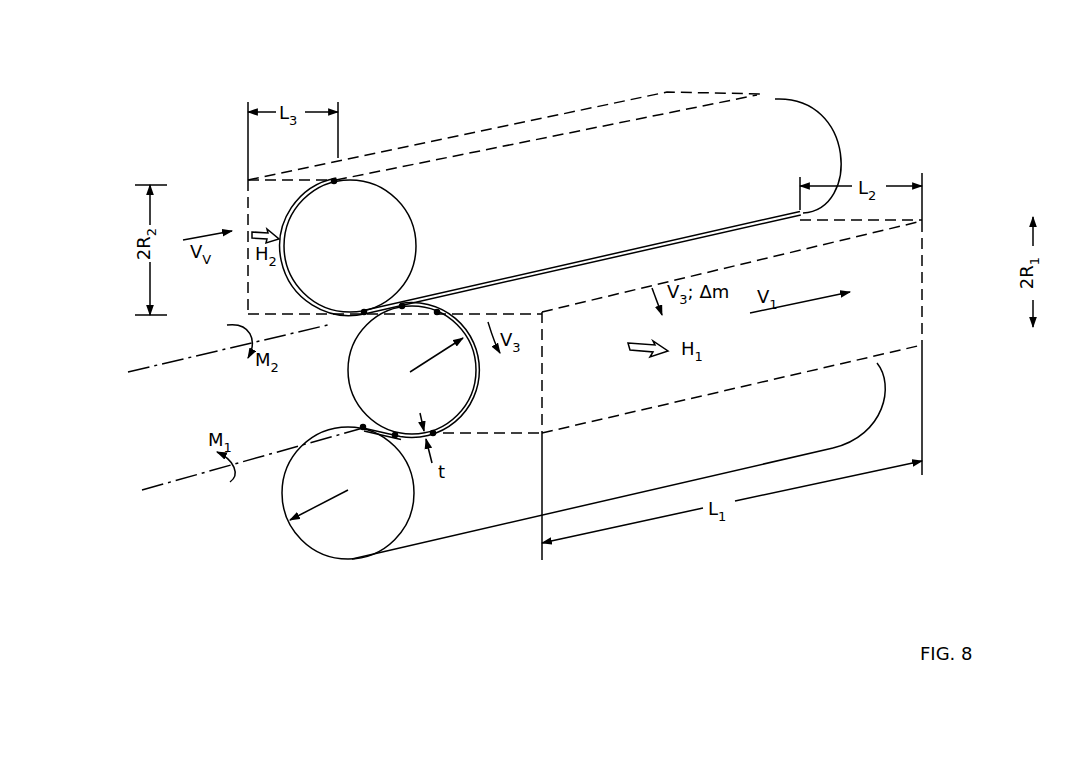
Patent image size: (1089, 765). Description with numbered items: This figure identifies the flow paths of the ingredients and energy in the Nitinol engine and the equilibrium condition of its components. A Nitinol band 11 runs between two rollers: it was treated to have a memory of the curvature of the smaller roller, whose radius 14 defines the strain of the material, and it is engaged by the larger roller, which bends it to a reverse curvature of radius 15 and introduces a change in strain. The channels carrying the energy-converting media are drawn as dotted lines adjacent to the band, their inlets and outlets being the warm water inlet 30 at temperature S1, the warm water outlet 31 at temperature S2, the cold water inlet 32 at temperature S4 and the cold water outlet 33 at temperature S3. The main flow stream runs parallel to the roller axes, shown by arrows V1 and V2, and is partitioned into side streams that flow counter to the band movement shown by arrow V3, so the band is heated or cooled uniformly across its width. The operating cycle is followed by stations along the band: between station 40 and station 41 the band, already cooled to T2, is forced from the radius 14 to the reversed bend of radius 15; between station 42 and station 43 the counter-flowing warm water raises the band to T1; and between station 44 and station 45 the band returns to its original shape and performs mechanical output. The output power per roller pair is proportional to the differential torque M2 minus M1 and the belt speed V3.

The Nitinol band 11 is at (480, 370).
The radius of the smaller roller 14 is at (320, 503).
The radius of the larger roller 15 is at (432, 358).
The warm water inlet 30 is at (525, 387).
The warm water outlet 31 is at (970, 268).
The cold water inlet 32 is at (242, 293).
The cold water outlet 33 is at (743, 80).
The station 40 is at (361, 302).
The station 41 is at (405, 317).
The station 42 is at (436, 323).
The station 43 is at (445, 442).
The station 44 is at (394, 424).
The station 45 is at (359, 442).